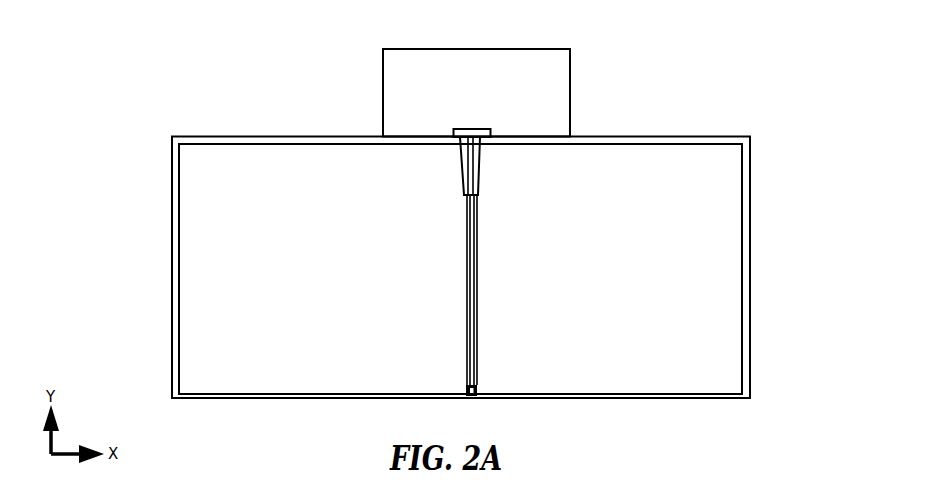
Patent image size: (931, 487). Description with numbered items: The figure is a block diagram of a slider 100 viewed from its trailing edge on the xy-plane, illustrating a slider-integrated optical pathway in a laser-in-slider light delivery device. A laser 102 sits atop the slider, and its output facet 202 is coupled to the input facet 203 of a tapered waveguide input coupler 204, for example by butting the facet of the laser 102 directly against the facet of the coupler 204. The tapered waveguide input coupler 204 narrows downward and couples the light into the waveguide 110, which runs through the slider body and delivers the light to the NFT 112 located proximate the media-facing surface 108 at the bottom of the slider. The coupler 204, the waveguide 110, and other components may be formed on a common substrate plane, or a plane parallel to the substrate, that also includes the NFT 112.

The slider 100 is at (483, 223).
The laser 102 is at (533, 48).
The media-facing surface 108 is at (715, 399).
The waveguide 110 is at (466, 343).
The NFT 112 is at (471, 398).
The output facet 202 is at (478, 128).
The input facet 203 is at (480, 143).
The tapered waveguide input coupler 204 is at (461, 167).